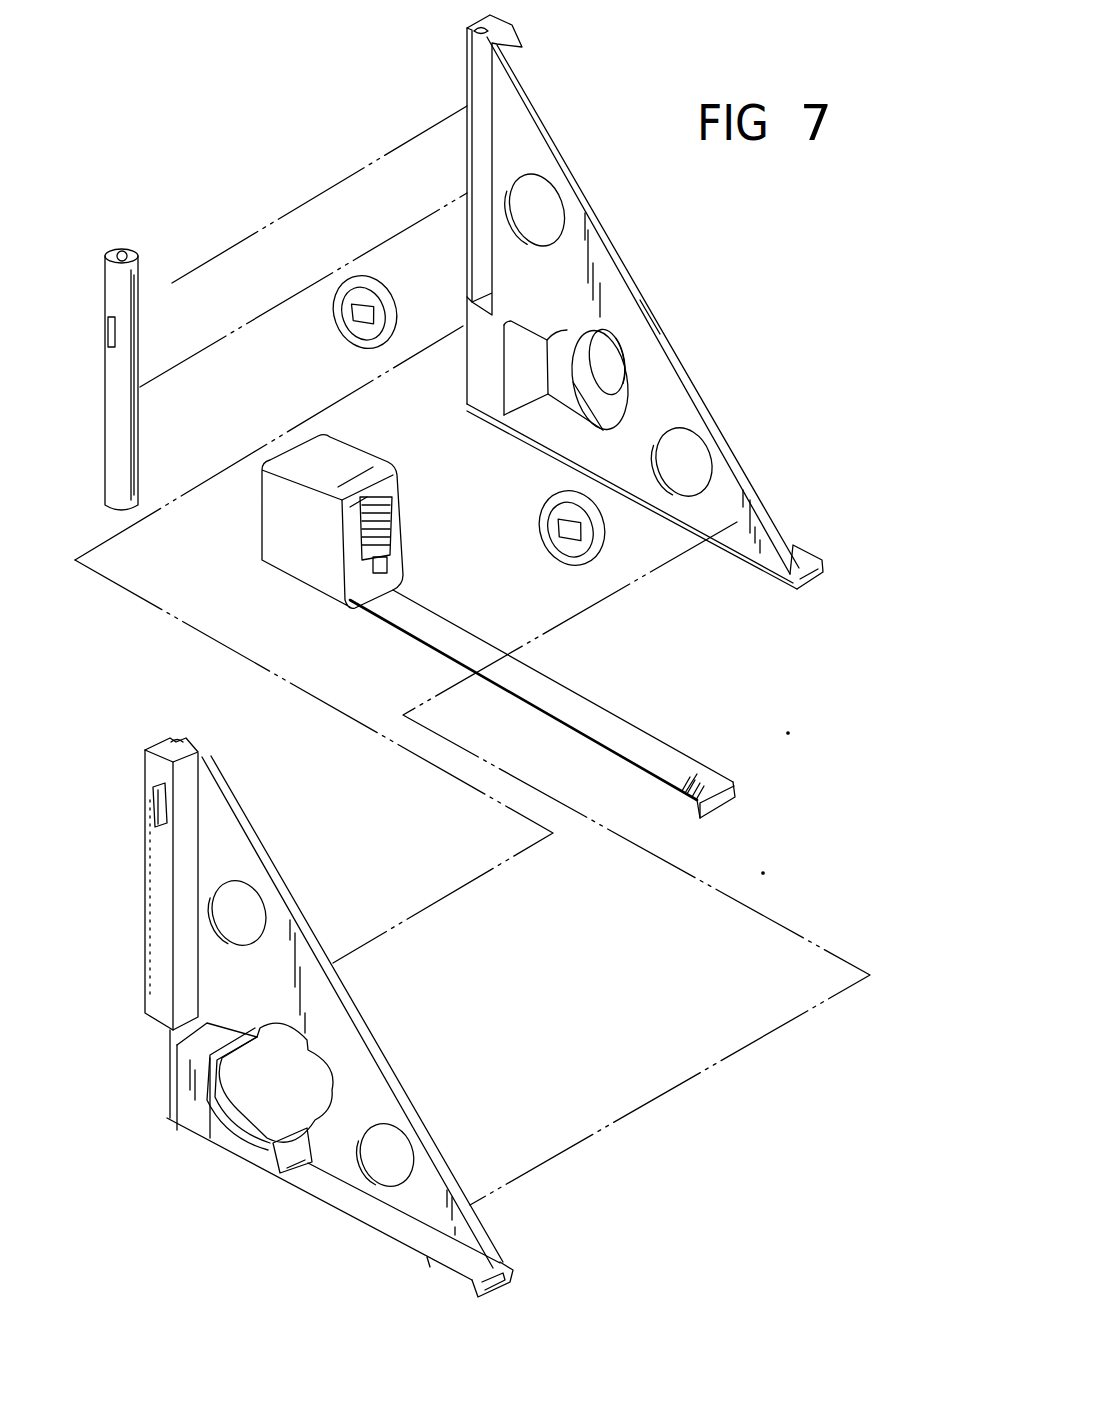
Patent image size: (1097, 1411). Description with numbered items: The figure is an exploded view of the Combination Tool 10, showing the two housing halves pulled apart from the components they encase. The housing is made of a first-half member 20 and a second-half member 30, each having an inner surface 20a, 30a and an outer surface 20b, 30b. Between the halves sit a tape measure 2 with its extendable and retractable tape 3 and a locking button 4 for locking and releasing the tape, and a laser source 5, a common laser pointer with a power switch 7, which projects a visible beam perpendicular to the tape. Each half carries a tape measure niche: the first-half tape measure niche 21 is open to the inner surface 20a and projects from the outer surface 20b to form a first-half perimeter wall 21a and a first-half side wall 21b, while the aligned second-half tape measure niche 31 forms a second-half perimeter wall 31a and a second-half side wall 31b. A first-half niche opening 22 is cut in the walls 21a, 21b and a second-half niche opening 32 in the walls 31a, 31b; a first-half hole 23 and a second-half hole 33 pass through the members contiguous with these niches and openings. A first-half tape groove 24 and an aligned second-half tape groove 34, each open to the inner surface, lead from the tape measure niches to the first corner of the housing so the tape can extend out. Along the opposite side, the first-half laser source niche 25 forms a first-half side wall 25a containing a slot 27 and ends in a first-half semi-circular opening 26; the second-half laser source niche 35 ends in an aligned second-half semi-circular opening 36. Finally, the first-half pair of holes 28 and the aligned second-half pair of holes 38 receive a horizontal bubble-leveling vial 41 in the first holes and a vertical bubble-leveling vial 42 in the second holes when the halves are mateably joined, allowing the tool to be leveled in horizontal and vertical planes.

The tape measure 2 is at (283, 530).
The extendable and retractable tape 3 is at (633, 740).
The locking button 4 is at (385, 525).
The laser source 5 is at (122, 440).
The power switch 7 is at (135, 340).
The Combination Tool 10 is at (777, 281).
The first-half member 20 is at (152, 1125).
The inner surface 20a is at (403, 1086).
The outer surface 20b is at (342, 1145).
The first-half tape measure niche 21 is at (225, 1143).
The first-half perimeter wall 21a is at (205, 1041).
The first-half side wall 21b is at (250, 1160).
The first-half niche opening 22 is at (203, 1100).
The first-half hole 23 is at (343, 1028).
The first-half tape groove 24 is at (507, 1275).
The first-half laser source niche 25 is at (160, 872).
The first-half side wall 25a is at (158, 940).
The first-half semi-circular opening 26 is at (183, 741).
The slot 27 is at (155, 804).
The first-half pair of holes 28 is at (243, 895).
The second-half member 30 is at (634, 252).
The inner surface 30a is at (665, 402).
The outer surface 30b is at (580, 178).
The second-half tape measure niche 31 is at (570, 395).
The second-half perimeter wall 31a is at (517, 372).
The second-half side wall 31b is at (578, 383).
The second-half niche opening 32 is at (592, 358).
The second-half hole 33 is at (652, 315).
The second-half tape groove 34 is at (805, 592).
The second-half laser source niche 35 is at (472, 154).
The second-half semi-circular opening 36 is at (480, 32).
The second-half pair of holes 38 is at (534, 185).
The horizontal bubble-leveling vial 41 is at (344, 337).
The vertical bubble-leveling vial 42 is at (562, 553).